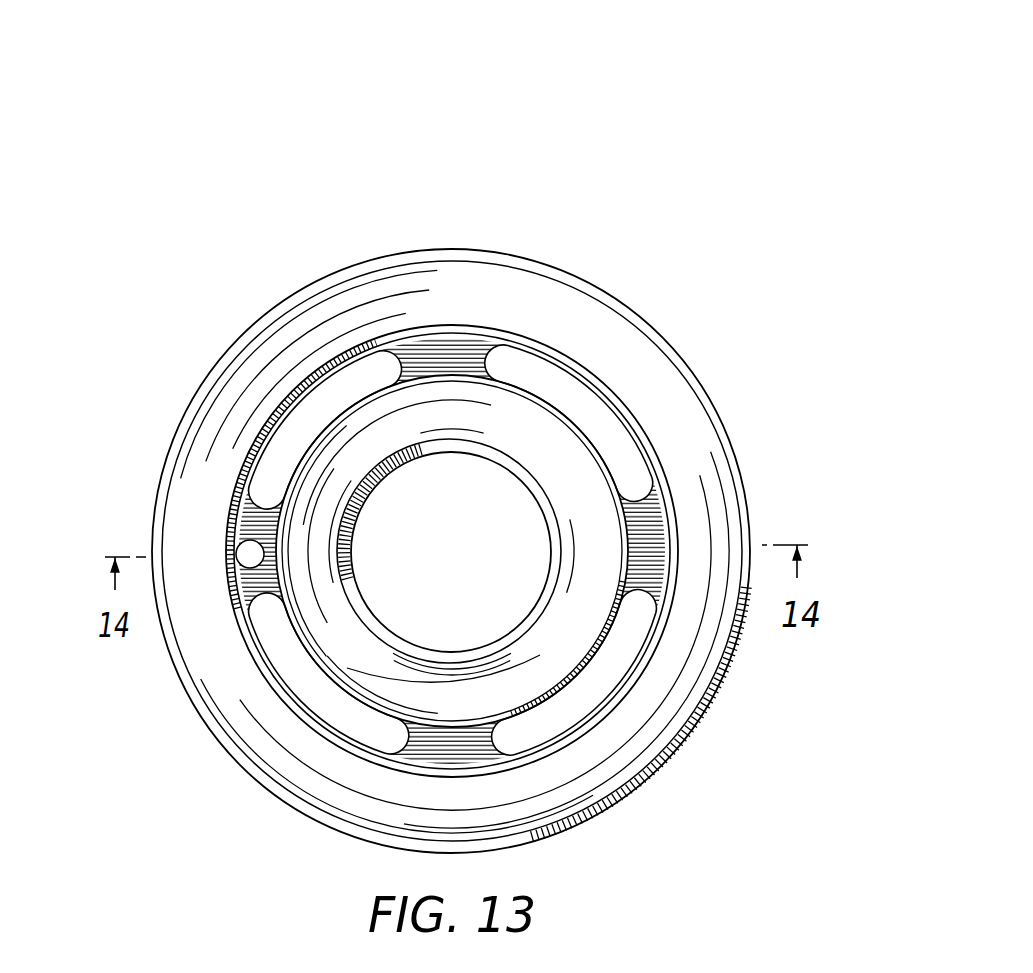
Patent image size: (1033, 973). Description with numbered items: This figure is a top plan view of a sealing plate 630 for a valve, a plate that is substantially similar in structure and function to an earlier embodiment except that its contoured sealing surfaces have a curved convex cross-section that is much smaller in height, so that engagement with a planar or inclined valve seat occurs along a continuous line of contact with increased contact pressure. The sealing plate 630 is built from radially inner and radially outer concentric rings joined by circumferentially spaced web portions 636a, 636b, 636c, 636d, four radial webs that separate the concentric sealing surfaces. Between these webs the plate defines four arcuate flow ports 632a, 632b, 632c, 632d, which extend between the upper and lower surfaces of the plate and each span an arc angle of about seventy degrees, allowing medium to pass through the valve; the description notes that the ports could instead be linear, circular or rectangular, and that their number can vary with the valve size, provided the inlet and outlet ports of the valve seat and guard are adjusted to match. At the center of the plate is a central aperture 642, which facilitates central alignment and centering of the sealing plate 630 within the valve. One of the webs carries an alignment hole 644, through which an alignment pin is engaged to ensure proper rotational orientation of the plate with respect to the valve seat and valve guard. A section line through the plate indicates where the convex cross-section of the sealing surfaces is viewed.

The sealing plate 630 is at (715, 48).
The flow port 632a is at (683, 320).
The flow port 632b is at (333, 385).
The flow port 632c is at (315, 700).
The flow port 632d is at (620, 700).
The web portion 636a is at (770, 437).
The web portion 636b is at (463, 337).
The web portion 636c is at (230, 592).
The web portion 636d is at (432, 752).
The central aperture 642 is at (451, 552).
The alignment hole 644 is at (249, 553).